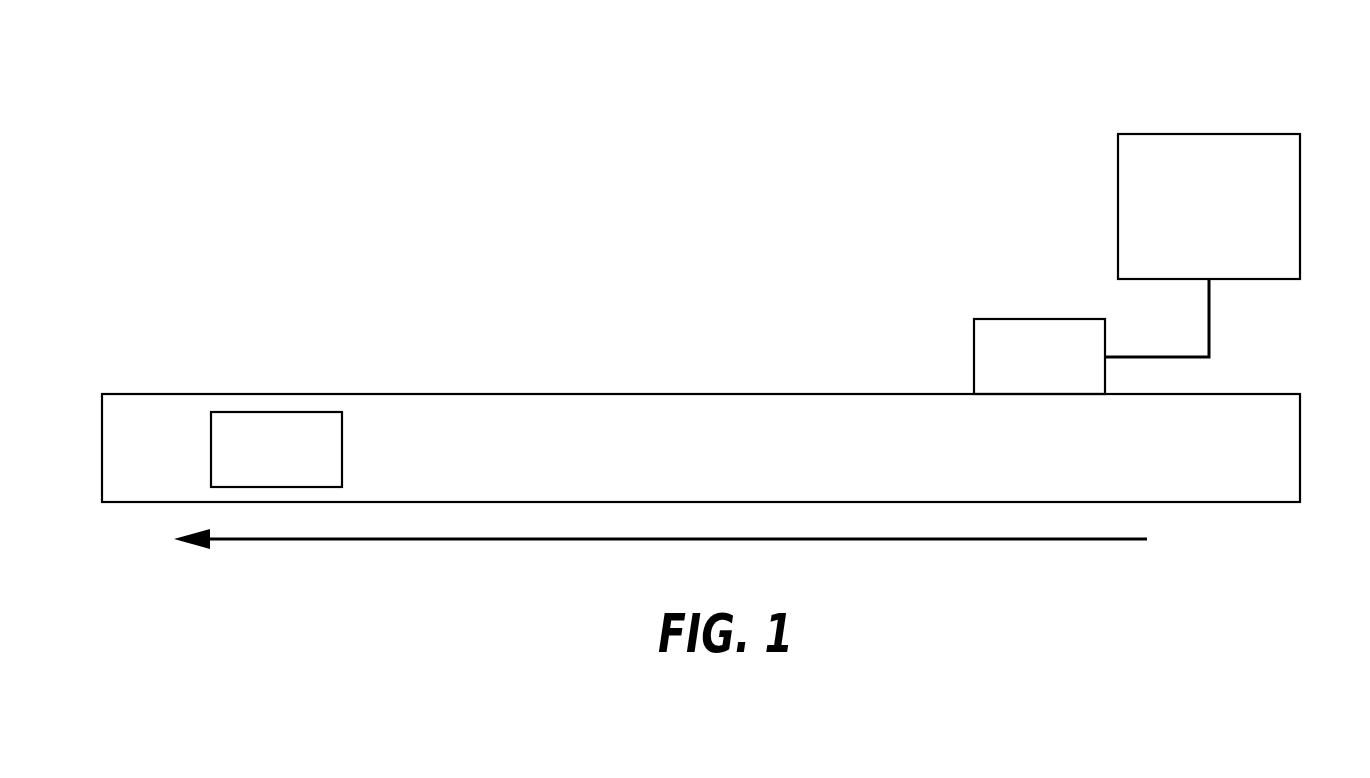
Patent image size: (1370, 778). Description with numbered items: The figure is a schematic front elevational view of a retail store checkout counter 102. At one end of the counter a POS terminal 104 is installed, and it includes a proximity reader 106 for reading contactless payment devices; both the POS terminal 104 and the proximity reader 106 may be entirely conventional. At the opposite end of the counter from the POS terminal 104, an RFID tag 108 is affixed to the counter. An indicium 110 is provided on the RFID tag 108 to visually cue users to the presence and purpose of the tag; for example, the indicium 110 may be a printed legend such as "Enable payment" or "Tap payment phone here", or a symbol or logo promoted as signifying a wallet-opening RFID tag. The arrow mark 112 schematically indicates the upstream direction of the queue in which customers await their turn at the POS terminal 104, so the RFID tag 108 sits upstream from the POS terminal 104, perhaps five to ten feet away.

The retail store checkout counter 102 is at (306, 258).
The POS terminal 104 is at (1268, 94).
The proximity reader 106 is at (1001, 319).
The RFID tag 108 is at (342, 431).
The indicium 110 is at (227, 420).
The arrow mark 112 is at (880, 541).